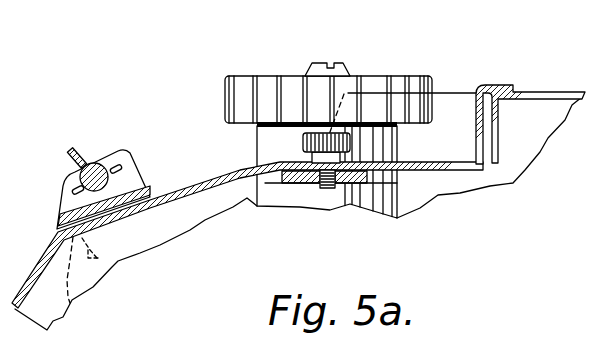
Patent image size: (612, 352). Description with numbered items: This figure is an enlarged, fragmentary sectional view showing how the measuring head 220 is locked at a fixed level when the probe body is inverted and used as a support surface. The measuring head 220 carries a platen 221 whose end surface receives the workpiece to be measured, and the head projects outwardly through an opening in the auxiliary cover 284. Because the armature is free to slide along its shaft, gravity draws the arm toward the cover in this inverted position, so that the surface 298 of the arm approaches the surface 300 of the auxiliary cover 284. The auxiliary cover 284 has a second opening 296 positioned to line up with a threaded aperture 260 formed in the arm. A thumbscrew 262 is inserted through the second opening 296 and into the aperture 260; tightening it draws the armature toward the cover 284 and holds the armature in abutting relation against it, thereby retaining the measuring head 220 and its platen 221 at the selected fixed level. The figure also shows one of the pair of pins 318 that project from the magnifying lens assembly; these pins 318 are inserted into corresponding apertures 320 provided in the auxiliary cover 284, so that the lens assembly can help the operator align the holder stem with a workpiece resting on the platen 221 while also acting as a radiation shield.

The measuring head 220 is at (324, 147).
The platen 221 is at (353, 47).
The aperture 260 is at (312, 210).
The thumbscrew 262 is at (380, 143).
The auxiliary cover 284 is at (306, 176).
The second opening 296 is at (306, 176).
The surface 298 is at (279, 152).
The surface 300 is at (298, 213).
The pins 318 is at (122, 265).
The apertures 320 is at (84, 290).